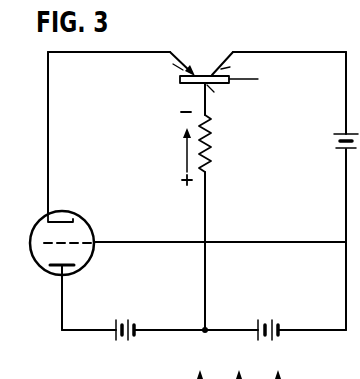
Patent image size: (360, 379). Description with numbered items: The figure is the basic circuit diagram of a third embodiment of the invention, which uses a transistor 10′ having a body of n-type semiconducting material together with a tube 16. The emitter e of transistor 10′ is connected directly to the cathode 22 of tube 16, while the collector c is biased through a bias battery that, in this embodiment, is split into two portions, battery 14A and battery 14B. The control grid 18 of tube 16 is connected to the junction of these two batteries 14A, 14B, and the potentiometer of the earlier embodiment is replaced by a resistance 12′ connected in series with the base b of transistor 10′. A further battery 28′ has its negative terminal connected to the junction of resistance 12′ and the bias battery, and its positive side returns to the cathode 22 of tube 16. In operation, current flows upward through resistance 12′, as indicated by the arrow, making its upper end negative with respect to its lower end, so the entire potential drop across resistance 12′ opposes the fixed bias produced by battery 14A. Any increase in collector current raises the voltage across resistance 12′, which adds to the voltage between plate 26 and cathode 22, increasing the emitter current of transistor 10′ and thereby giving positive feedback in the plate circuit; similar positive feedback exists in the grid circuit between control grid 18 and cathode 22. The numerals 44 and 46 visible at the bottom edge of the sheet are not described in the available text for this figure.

The transistor 10′ is at (180, 84).
The resistance 12′ is at (213, 151).
The battery 14A is at (265, 318).
The battery 14B is at (336, 146).
The tube 16 is at (94, 232).
The control grid 18 is at (73, 245).
The cathode 22 is at (62, 219).
The plate 26 is at (53, 268).
The battery 28′ is at (129, 322).
The element (partial, adjacent figure) 44 is at (83, 376).
The element (partial, adjacent figure) 46 is at (146, 374).